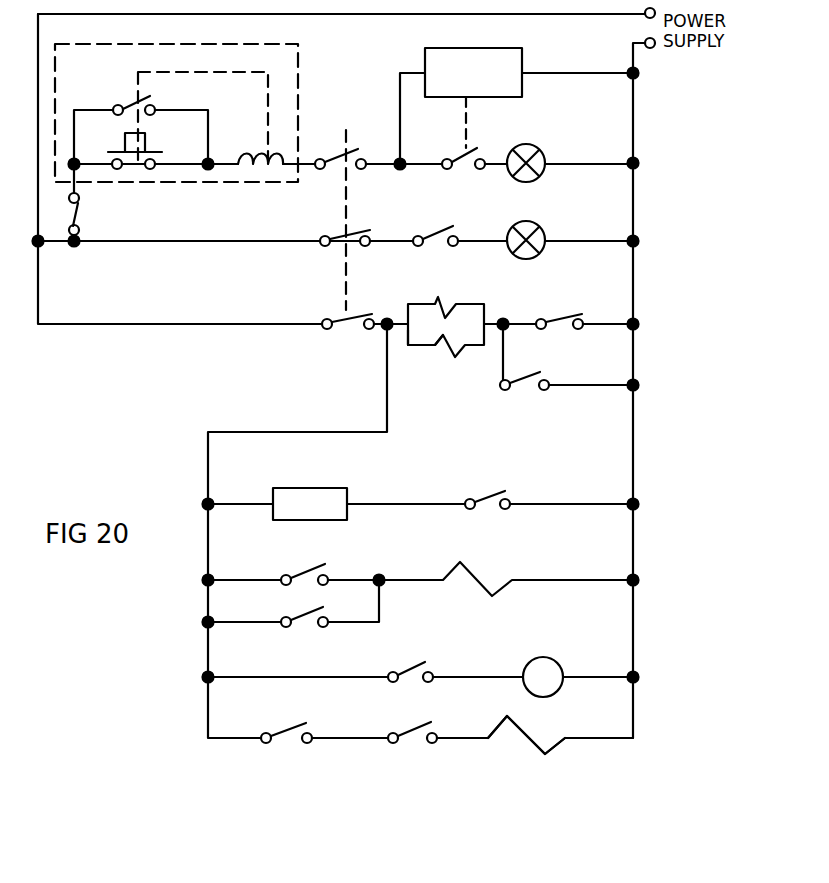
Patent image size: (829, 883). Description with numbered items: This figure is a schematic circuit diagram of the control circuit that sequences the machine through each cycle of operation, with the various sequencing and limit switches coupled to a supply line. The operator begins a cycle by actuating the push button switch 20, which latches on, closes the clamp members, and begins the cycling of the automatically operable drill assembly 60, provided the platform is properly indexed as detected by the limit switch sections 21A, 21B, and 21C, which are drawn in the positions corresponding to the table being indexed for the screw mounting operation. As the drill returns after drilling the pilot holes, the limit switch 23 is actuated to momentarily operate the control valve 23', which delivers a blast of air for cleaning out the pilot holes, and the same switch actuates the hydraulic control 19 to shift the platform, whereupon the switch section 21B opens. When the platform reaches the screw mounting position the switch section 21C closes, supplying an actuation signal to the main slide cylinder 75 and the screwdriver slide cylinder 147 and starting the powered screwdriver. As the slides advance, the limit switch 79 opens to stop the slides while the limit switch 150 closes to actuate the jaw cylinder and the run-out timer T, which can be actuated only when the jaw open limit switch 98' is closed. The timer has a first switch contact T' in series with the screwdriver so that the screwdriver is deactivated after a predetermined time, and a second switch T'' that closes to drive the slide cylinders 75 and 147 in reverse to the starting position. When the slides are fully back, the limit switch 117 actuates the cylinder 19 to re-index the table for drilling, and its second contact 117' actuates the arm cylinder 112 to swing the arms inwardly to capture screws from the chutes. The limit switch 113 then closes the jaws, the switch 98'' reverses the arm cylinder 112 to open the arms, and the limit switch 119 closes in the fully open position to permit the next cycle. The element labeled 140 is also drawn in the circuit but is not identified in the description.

The push button switch 20 is at (299, 52).
The limit switch 119 is at (80, 211).
The switch section 21A is at (340, 140).
The switch section 21B is at (340, 232).
The switch section 21C is at (338, 320).
The drill assembly 60 is at (478, 47).
The limit switch 23 is at (474, 138).
The control valve 23' is at (544, 147).
The limit switch 117 is at (440, 215).
The hydraulic control 19 is at (543, 223).
The main slide cylinder 75 is at (437, 297).
The screwdriver slide cylinder 147 is at (425, 335).
The limit switch 79 is at (563, 314).
The second switch of timer T'' is at (566, 357).
The solenoid device 140 is at (318, 487).
The first switch contact T' is at (487, 481).
The limit switch 113 is at (306, 570).
The limit switch 150 is at (304, 615).
The jaw open limit switch 98' is at (410, 658).
The run-out timer T is at (543, 677).
The second switch contact 117' is at (286, 718).
The switch 98'' is at (406, 718).
The arm cylinder 112 is at (527, 736).